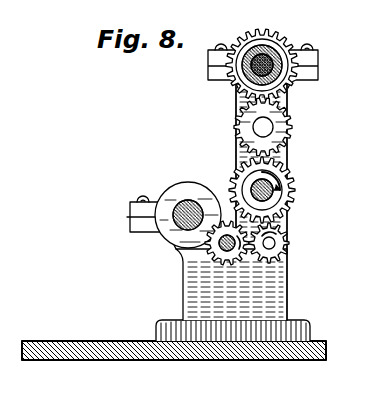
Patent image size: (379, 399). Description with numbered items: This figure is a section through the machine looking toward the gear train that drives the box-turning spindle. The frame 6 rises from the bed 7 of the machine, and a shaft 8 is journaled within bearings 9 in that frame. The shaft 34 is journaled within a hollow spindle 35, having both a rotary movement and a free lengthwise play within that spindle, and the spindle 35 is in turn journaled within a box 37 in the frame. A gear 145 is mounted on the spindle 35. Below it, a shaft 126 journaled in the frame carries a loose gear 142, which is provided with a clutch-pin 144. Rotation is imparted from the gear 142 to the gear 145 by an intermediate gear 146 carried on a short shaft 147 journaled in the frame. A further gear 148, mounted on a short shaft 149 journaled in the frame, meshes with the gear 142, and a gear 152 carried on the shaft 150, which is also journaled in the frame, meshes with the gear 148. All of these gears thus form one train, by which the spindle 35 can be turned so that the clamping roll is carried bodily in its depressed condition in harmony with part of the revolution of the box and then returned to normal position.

The frame 6 is at (193, 291).
The bed 7 is at (209, 349).
The shaft 8 is at (175, 198).
The bearings 9 is at (186, 207).
The shaft 34 is at (253, 69).
The hollow spindle 35 is at (283, 78).
The box 37 is at (288, 49).
The shaft 126 is at (255, 190).
The loose gear 142 is at (296, 192).
The clutch-pin 144 is at (282, 176).
The gear 145 is at (260, 50).
The intermediate gear 146 is at (287, 124).
The short shaft 147 is at (253, 128).
The gear 148 is at (287, 256).
The short shaft 149 is at (270, 243).
The shaft 150 is at (180, 253).
The gear 152 is at (213, 250).